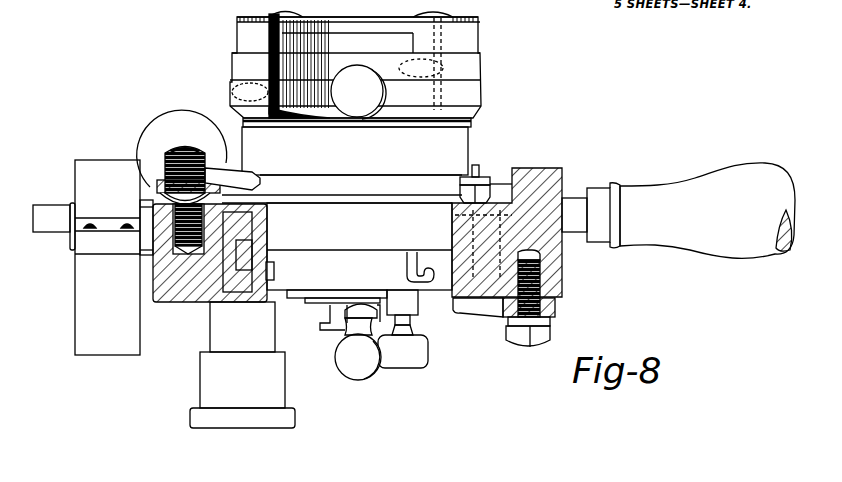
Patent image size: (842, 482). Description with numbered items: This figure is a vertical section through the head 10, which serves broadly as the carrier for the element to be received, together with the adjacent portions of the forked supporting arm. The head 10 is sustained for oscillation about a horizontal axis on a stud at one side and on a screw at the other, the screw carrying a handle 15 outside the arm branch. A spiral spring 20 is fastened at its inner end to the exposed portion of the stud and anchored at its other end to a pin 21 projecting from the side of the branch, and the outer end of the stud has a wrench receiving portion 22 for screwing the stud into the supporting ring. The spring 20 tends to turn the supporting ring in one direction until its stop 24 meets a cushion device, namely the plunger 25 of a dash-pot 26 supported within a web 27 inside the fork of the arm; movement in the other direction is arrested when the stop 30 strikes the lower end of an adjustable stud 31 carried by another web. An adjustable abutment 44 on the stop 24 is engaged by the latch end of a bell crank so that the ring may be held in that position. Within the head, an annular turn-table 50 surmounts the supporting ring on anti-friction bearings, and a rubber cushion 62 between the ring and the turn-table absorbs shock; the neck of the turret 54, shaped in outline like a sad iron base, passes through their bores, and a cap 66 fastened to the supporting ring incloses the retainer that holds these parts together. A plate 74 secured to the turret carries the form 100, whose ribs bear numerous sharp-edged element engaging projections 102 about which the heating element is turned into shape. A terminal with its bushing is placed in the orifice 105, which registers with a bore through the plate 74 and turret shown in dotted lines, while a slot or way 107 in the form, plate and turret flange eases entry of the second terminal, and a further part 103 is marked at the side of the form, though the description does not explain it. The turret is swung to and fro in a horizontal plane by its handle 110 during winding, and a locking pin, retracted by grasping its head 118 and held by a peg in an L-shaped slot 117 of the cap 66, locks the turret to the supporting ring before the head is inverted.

The head 10 is at (201, 79).
The handle 15 is at (678, 232).
The spiral spring 20 is at (86, 166).
The pin 21 is at (70, 243).
The wrench receiving portion 22 is at (42, 210).
The stop 24 is at (275, 237).
The plunger 25 is at (267, 253).
The dash-pot 26 is at (242, 365).
The web 27 is at (274, 277).
The stop 30 is at (452, 217).
The stud 31 is at (483, 174).
The adjustable abutment 44 is at (258, 186).
The turn-table 50 is at (355, 151).
The turret 54 is at (470, 89).
The cushion 62 is at (476, 126).
The cap 66 is at (359, 246).
The plate 74 is at (468, 66).
The form 100 is at (483, 44).
The element engaging projections 102 is at (478, 17).
The guide 103 is at (250, 92).
The orifice 105 is at (478, 31).
The slot or way 107 is at (272, 71).
The handle 110 is at (358, 92).
The L-shaped slot 117 is at (407, 253).
The head 118 is at (420, 354).